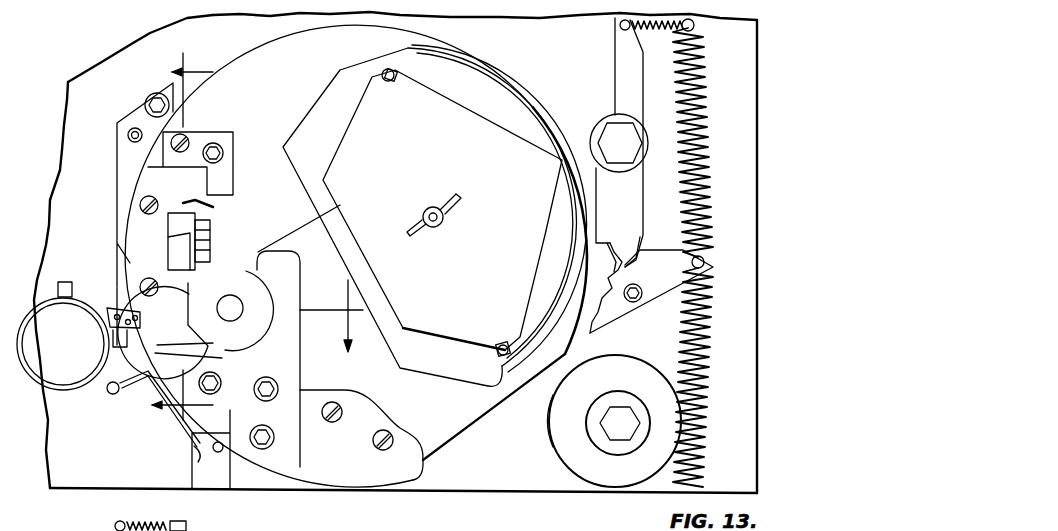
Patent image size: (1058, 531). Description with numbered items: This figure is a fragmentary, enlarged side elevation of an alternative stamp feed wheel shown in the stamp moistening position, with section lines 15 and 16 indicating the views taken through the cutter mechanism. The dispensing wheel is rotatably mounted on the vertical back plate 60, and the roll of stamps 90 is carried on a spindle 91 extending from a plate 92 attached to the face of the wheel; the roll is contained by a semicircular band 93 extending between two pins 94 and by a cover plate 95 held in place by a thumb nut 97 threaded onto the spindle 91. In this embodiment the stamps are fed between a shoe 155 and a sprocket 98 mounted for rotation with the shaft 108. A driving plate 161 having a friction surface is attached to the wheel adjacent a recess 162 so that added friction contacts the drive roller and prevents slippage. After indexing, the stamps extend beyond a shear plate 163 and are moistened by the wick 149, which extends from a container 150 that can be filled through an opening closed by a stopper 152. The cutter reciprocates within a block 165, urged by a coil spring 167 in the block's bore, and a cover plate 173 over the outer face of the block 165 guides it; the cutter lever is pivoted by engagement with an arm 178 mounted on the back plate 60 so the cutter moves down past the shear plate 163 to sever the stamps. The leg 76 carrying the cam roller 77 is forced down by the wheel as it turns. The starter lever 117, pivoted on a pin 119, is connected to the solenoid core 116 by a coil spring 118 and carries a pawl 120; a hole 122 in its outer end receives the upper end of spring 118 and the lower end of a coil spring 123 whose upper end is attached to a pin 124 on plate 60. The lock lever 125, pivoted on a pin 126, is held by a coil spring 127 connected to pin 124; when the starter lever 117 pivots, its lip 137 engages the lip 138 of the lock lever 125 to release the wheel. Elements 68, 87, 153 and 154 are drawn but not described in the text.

The section line 15 is at (238, 331).
The section line 16 is at (171, 236).
The vertical plate 60 is at (748, 477).
The wheel 68 is at (552, 423).
The leg 76 is at (207, 480).
The cam roller 77 is at (238, 453).
The wall 87 is at (150, 42).
The roll of stamps 90 is at (297, 230).
The spindle 91 is at (423, 218).
The plate 92 is at (453, 63).
The semicircular band 93 is at (480, 78).
The pins 94 is at (389, 81).
The cover plate 95 is at (358, 112).
The thumb nut 97 is at (458, 199).
The sprocket 98 is at (252, 270).
The shaft 108 is at (238, 298).
The core 116 is at (628, 306).
The starter lever 117 is at (663, 284).
The coil spring 118 is at (705, 367).
The pin 119 is at (618, 322).
The pawl 120 is at (615, 421).
The hole 122 is at (705, 264).
The coil spring 123 is at (707, 150).
The pin 124 is at (691, 30).
The lock lever 125 is at (638, 188).
The pin 126 is at (597, 128).
The coil spring 127 is at (630, 28).
The lip 137 is at (616, 262).
The lip 138 is at (640, 255).
The wick 149 is at (112, 308).
The container 150 is at (65, 370).
The stopper 152 is at (68, 282).
The rod 153 is at (173, 412).
The pin 154 is at (113, 394).
The shoe 155 is at (293, 327).
The driving plate 161 is at (343, 470).
The recess 162 is at (467, 433).
The shear plate 163 is at (196, 455).
The block 165 is at (230, 186).
The coil spring 167 is at (190, 207).
The cover plate 173 is at (137, 243).
The arm 178 is at (120, 150).